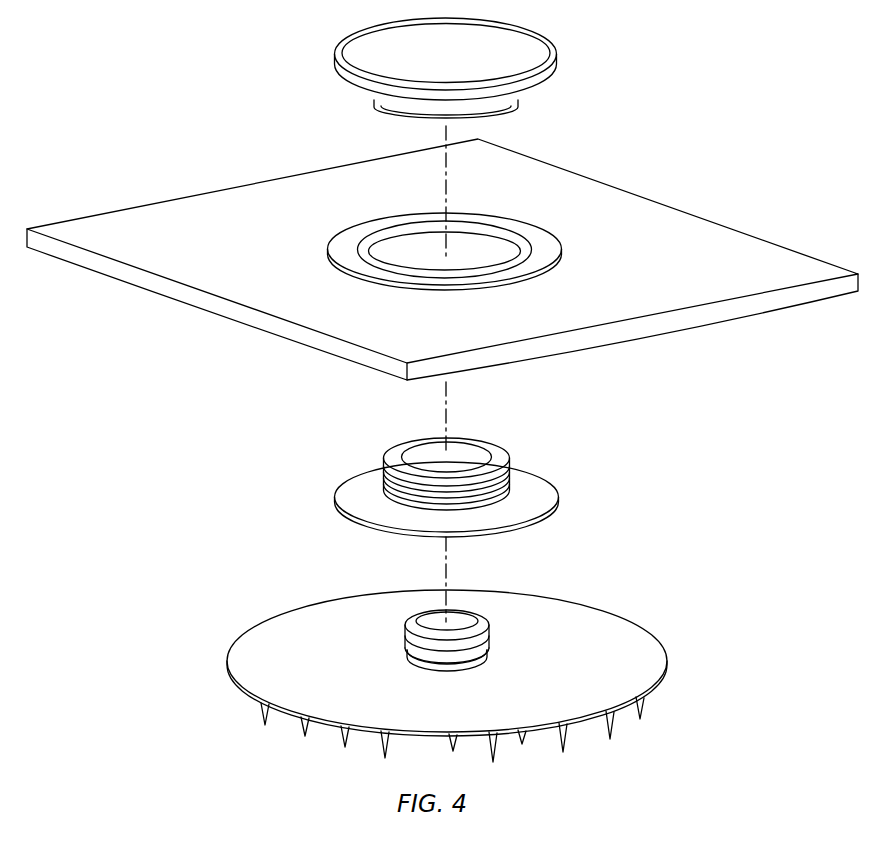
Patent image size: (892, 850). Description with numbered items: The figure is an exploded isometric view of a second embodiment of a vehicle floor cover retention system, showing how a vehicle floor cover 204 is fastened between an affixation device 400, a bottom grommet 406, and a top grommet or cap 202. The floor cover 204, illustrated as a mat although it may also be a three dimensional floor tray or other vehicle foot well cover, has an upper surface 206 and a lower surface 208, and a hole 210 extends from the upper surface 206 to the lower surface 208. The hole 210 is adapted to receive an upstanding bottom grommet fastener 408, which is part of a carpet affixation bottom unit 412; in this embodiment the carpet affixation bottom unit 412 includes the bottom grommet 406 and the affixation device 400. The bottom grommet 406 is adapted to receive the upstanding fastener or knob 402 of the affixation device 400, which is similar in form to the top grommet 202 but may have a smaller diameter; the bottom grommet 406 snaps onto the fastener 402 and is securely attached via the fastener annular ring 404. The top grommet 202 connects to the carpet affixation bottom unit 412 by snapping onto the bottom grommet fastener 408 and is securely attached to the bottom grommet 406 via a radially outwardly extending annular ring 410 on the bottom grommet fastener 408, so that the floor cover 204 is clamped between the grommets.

The top grommet 202 is at (556, 60).
The vehicle floor cover 204 is at (442, 256).
The upper surface 206 is at (733, 260).
The lower surface 208 is at (743, 283).
The hole 210 is at (473, 256).
The affixation device 400 is at (447, 648).
The fastener 402 is at (457, 618).
The fastener annular ring 404 is at (487, 630).
The bottom grommet 406 is at (358, 482).
The bottom grommet fastener 408 is at (483, 443).
The annular ring 410 is at (513, 472).
The carpet affixation bottom unit 412 is at (490, 577).